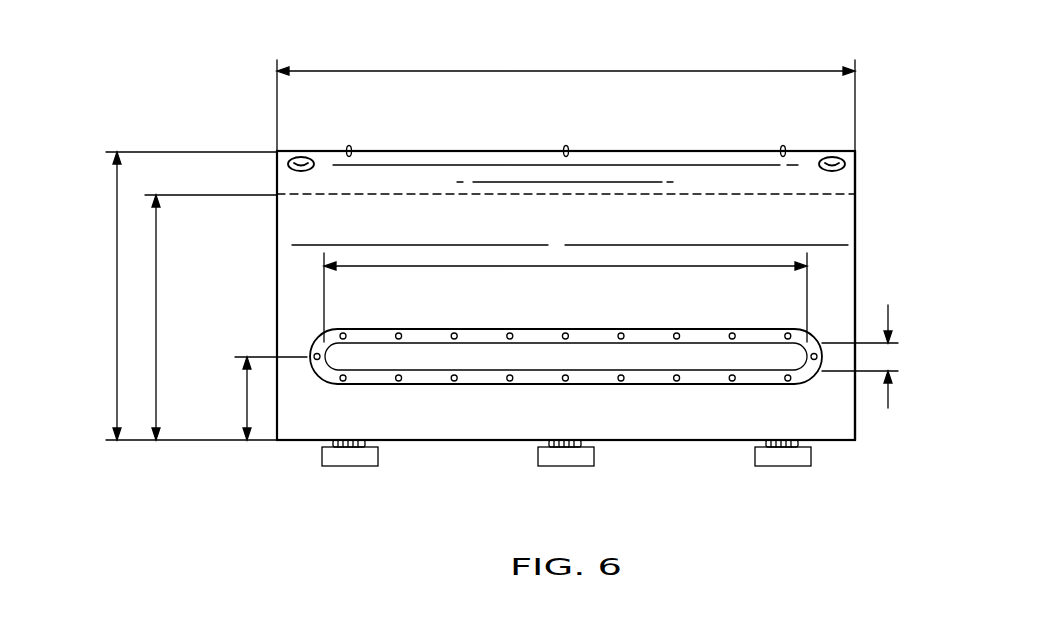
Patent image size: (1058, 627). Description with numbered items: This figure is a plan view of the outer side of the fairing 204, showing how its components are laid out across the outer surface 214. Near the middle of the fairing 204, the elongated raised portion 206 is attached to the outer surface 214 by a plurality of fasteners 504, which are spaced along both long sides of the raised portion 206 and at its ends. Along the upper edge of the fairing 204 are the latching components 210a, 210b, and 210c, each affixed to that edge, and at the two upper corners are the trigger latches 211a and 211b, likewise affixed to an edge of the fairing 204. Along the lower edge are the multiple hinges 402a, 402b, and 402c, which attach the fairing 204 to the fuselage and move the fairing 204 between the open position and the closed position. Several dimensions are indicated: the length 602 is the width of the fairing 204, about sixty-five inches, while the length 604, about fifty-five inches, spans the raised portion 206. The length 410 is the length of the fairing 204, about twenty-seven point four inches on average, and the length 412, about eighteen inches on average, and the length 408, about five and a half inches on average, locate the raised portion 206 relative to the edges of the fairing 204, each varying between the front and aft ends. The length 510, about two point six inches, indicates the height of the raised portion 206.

The length 602 is at (566, 70).
The latching component 210a is at (349, 146).
The latching component 210b is at (566, 146).
The latching component 210c is at (783, 146).
The fairing 204 is at (880, 140).
The trigger latch 211a is at (300, 171).
The trigger latch 211b is at (833, 171).
The length 604 is at (565, 262).
The outer surface 214 is at (848, 276).
The length 410 is at (117, 297).
The length 412 is at (156, 318).
The raised portion 206 is at (596, 328).
The fasteners 504 is at (733, 334).
The length 408 is at (247, 398).
The length 510 is at (888, 395).
The hinge 402a is at (349, 459).
The hinge 402b is at (566, 459).
The hinge 402c is at (784, 459).